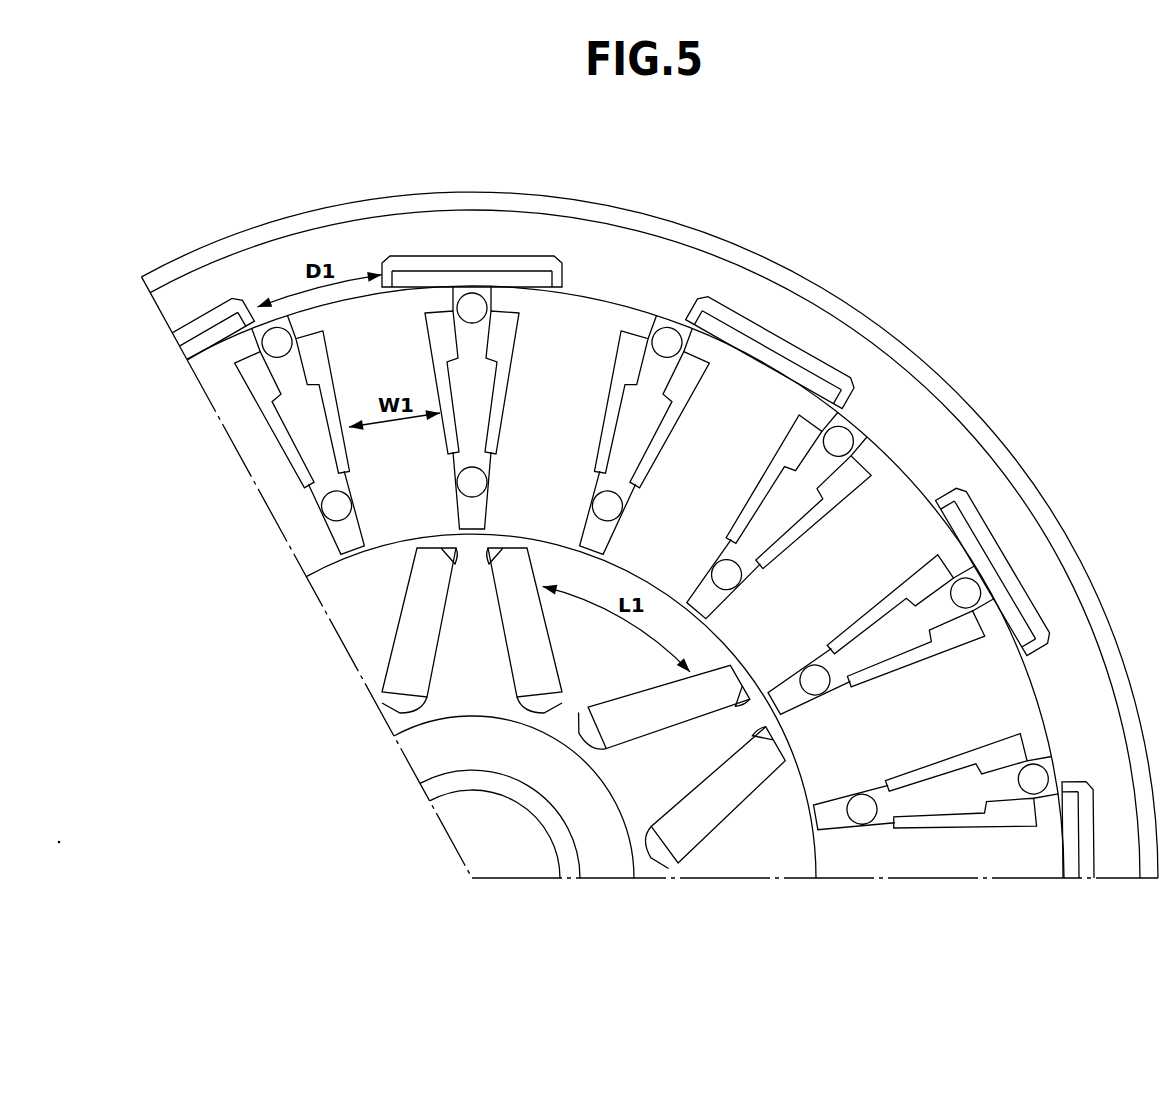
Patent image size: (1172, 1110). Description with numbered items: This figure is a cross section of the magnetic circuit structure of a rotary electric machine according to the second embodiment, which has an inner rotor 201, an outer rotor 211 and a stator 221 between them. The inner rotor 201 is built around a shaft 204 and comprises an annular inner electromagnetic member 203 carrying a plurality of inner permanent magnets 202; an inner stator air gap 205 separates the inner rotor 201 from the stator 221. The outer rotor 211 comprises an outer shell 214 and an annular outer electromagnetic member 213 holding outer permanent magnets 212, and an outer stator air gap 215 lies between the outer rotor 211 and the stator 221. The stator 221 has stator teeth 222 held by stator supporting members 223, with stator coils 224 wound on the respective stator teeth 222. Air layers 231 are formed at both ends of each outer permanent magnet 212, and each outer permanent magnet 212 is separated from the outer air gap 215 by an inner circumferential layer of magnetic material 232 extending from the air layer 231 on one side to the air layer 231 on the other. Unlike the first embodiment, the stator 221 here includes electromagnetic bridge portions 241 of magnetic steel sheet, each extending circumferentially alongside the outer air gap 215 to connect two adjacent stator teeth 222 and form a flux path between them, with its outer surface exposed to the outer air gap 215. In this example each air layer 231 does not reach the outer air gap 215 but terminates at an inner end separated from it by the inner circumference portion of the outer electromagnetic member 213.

The inner rotor 201 is at (357, 614).
The inner permanent magnets 202 is at (410, 647).
The annular inner electromagnetic member 203 is at (407, 720).
The shaft 204 is at (423, 750).
The inner stator air gap 205 is at (330, 560).
The outer rotor 211 is at (174, 311).
The outer permanent magnets 212 is at (210, 318).
The annular outer electromagnetic member 213 is at (343, 243).
The outer shell 214 is at (145, 287).
The outer stator air gap 215 is at (187, 354).
The stator 221 is at (263, 465).
The stator teeth 222 is at (887, 507).
The stator supporting members 223 is at (723, 572).
The stator coils 224 is at (808, 417).
The air layers 231 is at (694, 300).
The inner circumferential layer of magnetic material 232 is at (536, 285).
The electromagnetic bridge portions 241 is at (857, 433).